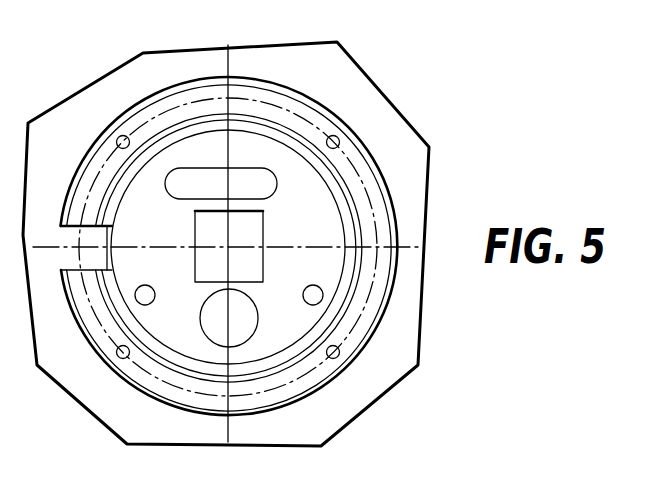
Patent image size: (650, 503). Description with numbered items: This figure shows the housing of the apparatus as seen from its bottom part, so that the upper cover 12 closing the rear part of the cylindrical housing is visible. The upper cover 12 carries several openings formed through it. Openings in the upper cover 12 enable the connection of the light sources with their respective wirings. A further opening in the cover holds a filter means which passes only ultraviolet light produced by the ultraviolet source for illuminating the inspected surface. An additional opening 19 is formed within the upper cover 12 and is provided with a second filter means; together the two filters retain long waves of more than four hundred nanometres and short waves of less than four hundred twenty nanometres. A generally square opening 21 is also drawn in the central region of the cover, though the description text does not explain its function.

The upper cover 12 is at (376, 204).
The additional opening 19 is at (225, 333).
The square opening 21 is at (208, 229).